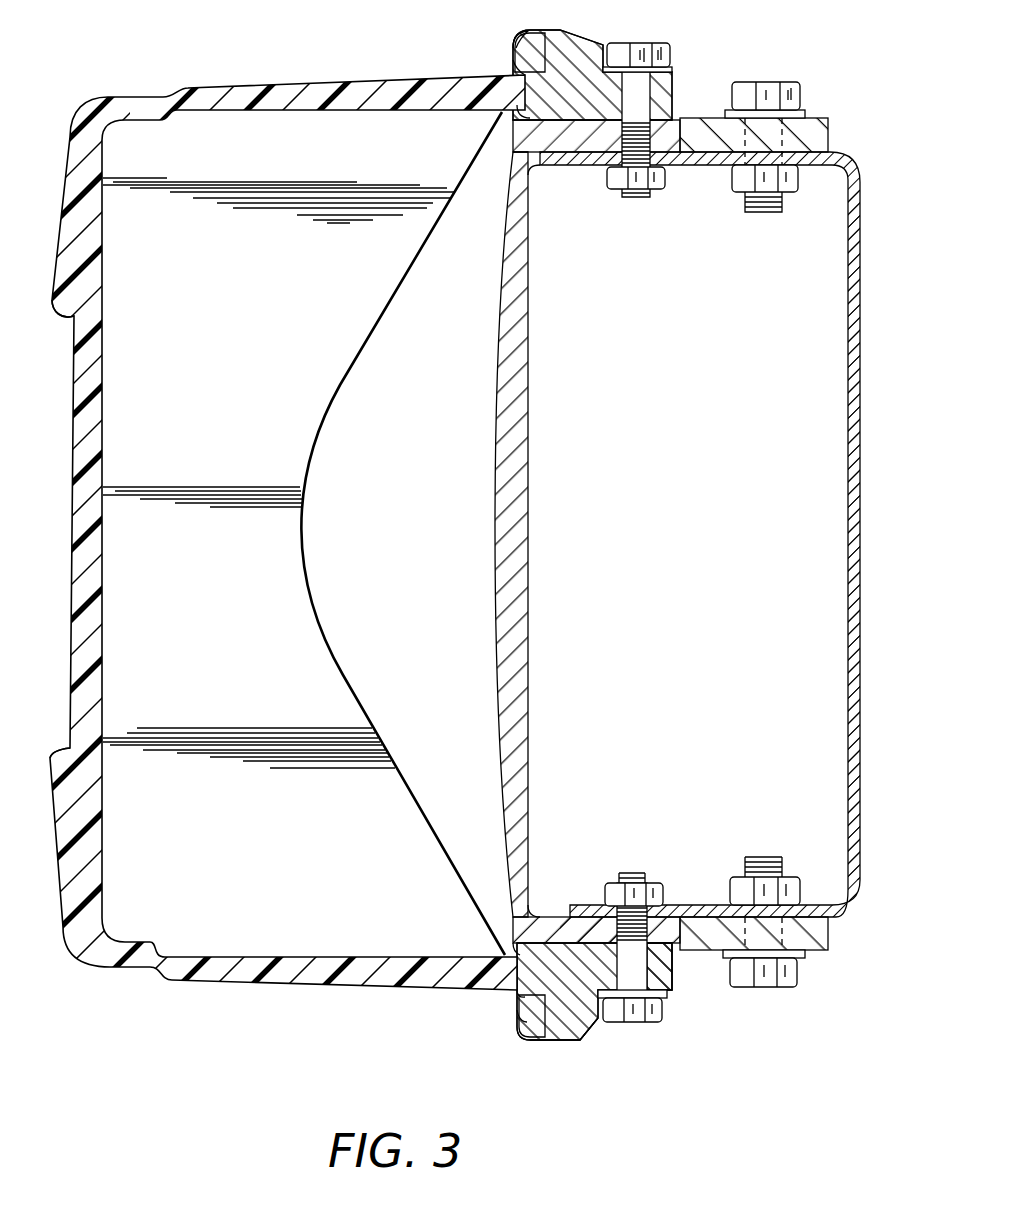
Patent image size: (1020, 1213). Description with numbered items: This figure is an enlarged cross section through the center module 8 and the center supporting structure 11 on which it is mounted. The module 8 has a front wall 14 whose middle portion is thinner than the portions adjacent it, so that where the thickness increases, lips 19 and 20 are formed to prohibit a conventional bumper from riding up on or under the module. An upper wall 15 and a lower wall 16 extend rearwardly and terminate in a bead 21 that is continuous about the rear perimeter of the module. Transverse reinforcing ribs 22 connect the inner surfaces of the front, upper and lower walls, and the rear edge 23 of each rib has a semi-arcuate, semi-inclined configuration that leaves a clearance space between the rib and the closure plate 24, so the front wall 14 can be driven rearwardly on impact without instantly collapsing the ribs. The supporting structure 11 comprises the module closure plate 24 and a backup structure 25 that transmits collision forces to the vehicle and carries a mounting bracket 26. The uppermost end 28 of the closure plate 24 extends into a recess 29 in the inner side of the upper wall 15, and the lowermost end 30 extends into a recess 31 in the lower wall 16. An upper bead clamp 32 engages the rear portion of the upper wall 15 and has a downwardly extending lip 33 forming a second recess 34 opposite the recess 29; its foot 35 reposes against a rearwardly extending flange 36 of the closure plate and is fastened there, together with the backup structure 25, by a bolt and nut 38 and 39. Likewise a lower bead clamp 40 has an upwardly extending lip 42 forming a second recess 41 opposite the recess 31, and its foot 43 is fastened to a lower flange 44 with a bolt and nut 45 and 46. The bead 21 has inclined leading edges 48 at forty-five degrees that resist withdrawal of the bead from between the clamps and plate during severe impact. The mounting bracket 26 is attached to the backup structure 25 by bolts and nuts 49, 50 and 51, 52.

The center module 8 is at (510, 606).
The center supporting structure 11 is at (727, 534).
The front wall 14 is at (80, 562).
The upper or top wall 15 is at (325, 606).
The lower or bottom wall 16 is at (510, 606).
The lip 19 is at (72, 322).
The lip 20 is at (70, 740).
The bead 21 is at (557, 65).
The transverse reinforcing ribs 22 is at (252, 311).
The rear edge of rib 23 is at (303, 536).
The module closure plate 24 is at (527, 444).
The backup structure 25 is at (860, 328).
The mounting bracket 26 is at (825, 137).
The uppermost end of closure plate 28 is at (514, 153).
The recess 29 is at (517, 118).
The lowermost end of closure plate 30 is at (578, 897).
The recess 31 is at (512, 950).
The upper bead clamp 32 is at (600, 48).
The downwardly extending lip 33 is at (520, 38).
The second recess 34 is at (520, 63).
The foot of bead clamp 35 is at (658, 112).
The rearwardly extending flange 36 is at (572, 145).
The bolt 38 is at (664, 44).
The nut 39 is at (656, 180).
The lower bead clamp 40 is at (588, 1030).
The second recess 41 is at (519, 997).
The upwardly extending lip 42 is at (519, 1018).
The foot of bead clamp 43 is at (665, 962).
The rearwardly extending flange 44 is at (586, 930).
The bolt 45 is at (652, 1022).
The nut 46 is at (650, 895).
The inclined leading edge 48 is at (538, 48).
The bolt 49 is at (792, 88).
The nut 50 is at (795, 185).
The bolt 51 is at (795, 985).
The nut 52 is at (735, 895).